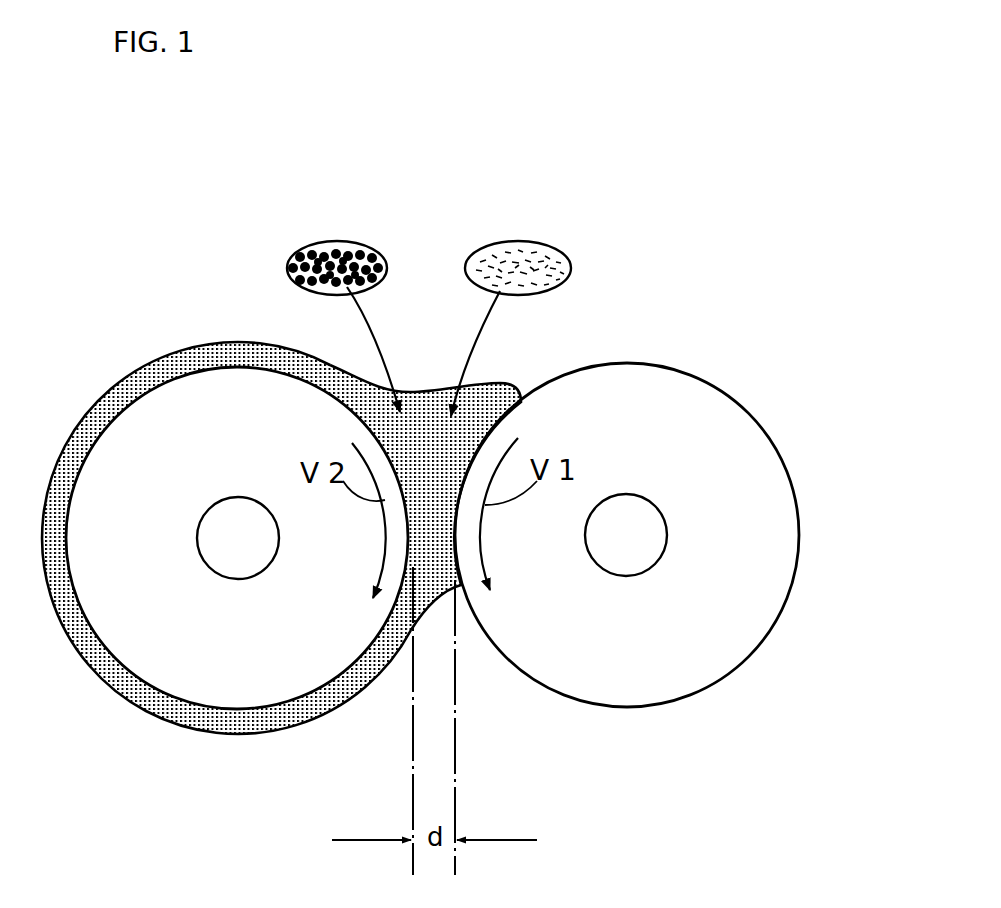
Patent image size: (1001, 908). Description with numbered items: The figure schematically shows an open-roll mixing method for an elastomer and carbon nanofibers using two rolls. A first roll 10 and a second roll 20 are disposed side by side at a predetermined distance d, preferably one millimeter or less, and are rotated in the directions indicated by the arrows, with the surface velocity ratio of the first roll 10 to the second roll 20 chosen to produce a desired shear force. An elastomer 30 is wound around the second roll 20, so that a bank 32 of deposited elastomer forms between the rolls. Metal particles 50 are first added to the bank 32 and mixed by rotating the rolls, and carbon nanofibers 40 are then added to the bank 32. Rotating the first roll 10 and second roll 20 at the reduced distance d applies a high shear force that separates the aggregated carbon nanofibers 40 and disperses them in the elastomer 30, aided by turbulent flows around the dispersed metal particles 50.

The first roll 10 is at (675, 640).
The second roll 20 is at (145, 652).
The elastomer 30 is at (153, 372).
The bank 32 is at (470, 400).
The carbon nanofibers 40 is at (538, 244).
The metal particles 50 is at (350, 244).